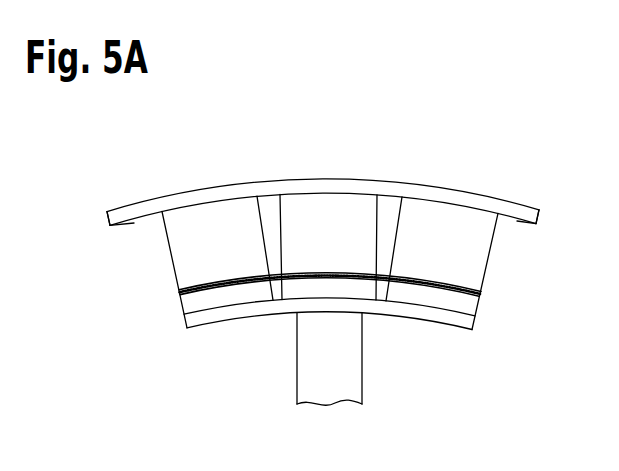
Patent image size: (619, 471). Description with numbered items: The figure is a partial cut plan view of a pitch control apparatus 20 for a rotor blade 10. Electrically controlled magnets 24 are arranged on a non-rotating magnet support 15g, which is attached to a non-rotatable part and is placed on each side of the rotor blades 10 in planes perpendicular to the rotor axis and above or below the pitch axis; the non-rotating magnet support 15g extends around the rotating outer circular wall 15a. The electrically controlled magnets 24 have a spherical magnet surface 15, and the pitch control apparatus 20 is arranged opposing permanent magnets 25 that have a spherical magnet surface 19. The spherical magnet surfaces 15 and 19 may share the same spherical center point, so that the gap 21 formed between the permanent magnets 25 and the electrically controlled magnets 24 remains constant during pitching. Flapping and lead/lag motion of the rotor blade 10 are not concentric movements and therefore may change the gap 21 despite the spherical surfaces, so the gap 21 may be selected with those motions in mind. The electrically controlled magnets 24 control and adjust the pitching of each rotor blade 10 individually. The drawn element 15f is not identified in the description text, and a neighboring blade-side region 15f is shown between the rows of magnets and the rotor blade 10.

The rotor blade 10 is at (332, 372).
The spherical magnet surface 15 is at (343, 272).
The rotating outer circular wall 15a is at (517, 203).
The magnet segment side wall 15f is at (437, 313).
The non-rotating magnet support 15g is at (134, 222).
The spherical magnet surface 19 is at (207, 289).
The pitch control apparatus 20 is at (415, 132).
The gap 21 is at (160, 292).
The electrically controlled magnets 24 is at (203, 243).
The permanent magnets 25 is at (185, 301).